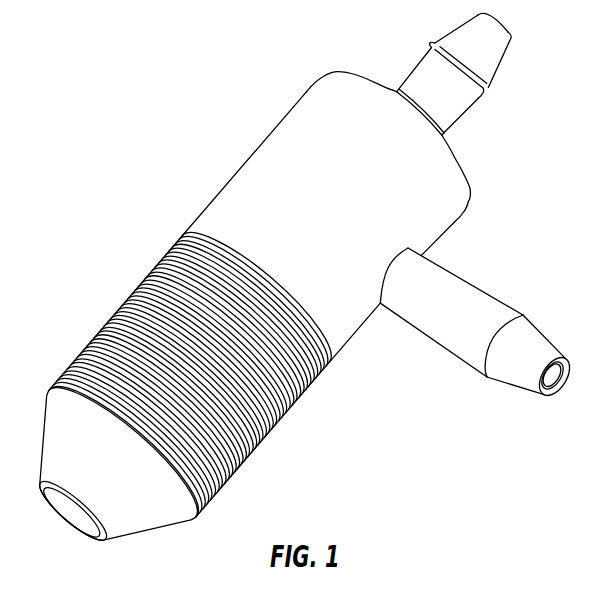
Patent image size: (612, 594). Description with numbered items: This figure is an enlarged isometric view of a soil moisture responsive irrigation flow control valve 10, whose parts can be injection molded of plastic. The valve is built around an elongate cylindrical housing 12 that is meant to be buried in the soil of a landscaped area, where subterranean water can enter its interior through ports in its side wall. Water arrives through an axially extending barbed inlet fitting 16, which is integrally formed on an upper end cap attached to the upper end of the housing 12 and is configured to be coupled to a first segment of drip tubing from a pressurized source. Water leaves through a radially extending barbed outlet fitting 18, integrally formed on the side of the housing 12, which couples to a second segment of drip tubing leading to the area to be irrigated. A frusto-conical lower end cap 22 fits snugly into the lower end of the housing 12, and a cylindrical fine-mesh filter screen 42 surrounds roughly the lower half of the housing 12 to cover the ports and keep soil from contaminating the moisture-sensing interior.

The soil moisture responsive irrigation flow control valve 10 is at (146, 172).
The elongate cylindrical housing 12 is at (449, 217).
The barbed inlet fitting 16 is at (512, 38).
The barbed outlet fitting 18 is at (501, 307).
The frusto-conical lower end cap 22 is at (133, 533).
The filter screen 42 is at (277, 417).